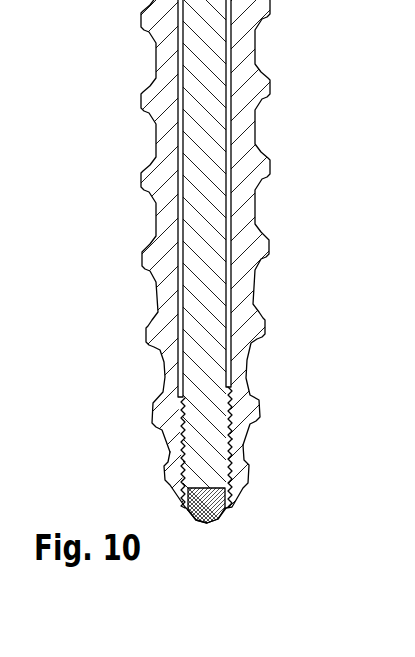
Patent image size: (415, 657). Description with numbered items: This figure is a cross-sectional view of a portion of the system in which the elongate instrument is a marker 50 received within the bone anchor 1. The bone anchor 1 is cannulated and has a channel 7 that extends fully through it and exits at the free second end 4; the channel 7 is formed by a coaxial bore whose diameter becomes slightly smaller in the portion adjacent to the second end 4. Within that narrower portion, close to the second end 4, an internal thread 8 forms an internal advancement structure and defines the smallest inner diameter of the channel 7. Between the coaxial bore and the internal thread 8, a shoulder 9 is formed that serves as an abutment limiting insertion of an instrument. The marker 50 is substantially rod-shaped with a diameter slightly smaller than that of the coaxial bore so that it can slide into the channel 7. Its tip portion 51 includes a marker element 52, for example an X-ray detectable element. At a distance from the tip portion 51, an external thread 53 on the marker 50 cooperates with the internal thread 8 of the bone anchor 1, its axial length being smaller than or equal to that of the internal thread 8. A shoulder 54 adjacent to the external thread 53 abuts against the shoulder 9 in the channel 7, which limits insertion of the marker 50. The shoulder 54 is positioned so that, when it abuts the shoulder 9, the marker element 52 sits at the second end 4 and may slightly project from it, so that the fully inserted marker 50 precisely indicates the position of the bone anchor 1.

The bone anchor 1 is at (279, 169).
The second end 4 is at (184, 513).
The channel 7 is at (177, 67).
The internal thread 8 is at (182, 485).
The shoulder 9 is at (182, 400).
The marker 50 is at (218, 212).
The tip portion 51 is at (234, 470).
The marker element 52 is at (220, 517).
The external thread 53 is at (236, 452).
The shoulder 54 is at (247, 374).